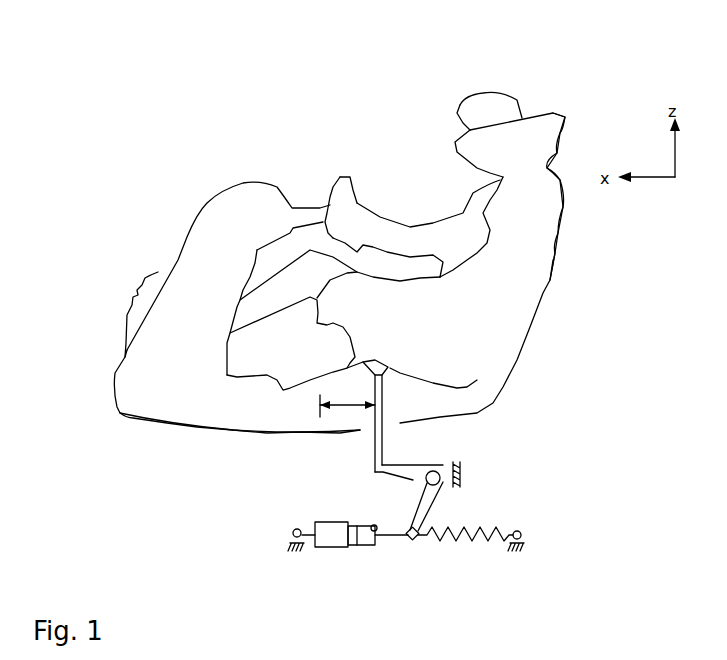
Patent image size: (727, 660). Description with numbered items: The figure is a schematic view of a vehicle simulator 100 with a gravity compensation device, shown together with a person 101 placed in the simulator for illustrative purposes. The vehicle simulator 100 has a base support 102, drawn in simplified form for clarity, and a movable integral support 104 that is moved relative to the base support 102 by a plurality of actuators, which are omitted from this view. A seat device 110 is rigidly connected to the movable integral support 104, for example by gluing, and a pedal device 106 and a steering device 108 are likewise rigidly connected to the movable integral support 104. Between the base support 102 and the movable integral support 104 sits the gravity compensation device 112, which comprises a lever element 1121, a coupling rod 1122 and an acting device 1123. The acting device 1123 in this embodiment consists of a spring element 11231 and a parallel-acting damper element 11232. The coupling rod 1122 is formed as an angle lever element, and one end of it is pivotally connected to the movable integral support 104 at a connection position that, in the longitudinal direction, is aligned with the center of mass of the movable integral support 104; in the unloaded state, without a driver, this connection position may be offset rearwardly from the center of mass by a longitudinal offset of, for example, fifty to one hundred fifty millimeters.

The vehicle simulator 100 is at (606, 57).
The person 101 is at (463, 215).
The base support 102 is at (288, 548).
The movable integral support 104 is at (197, 415).
The pedal device 106 is at (138, 323).
The steering device 108 is at (343, 188).
The seat device 110 is at (463, 372).
The gravity compensation device 112 is at (440, 488).
The lever element 1121 is at (437, 500).
The coupling rod 1122 is at (377, 453).
The acting device 1123 is at (456, 548).
The spring element 11231 is at (465, 548).
The damper element 11232 is at (338, 522).